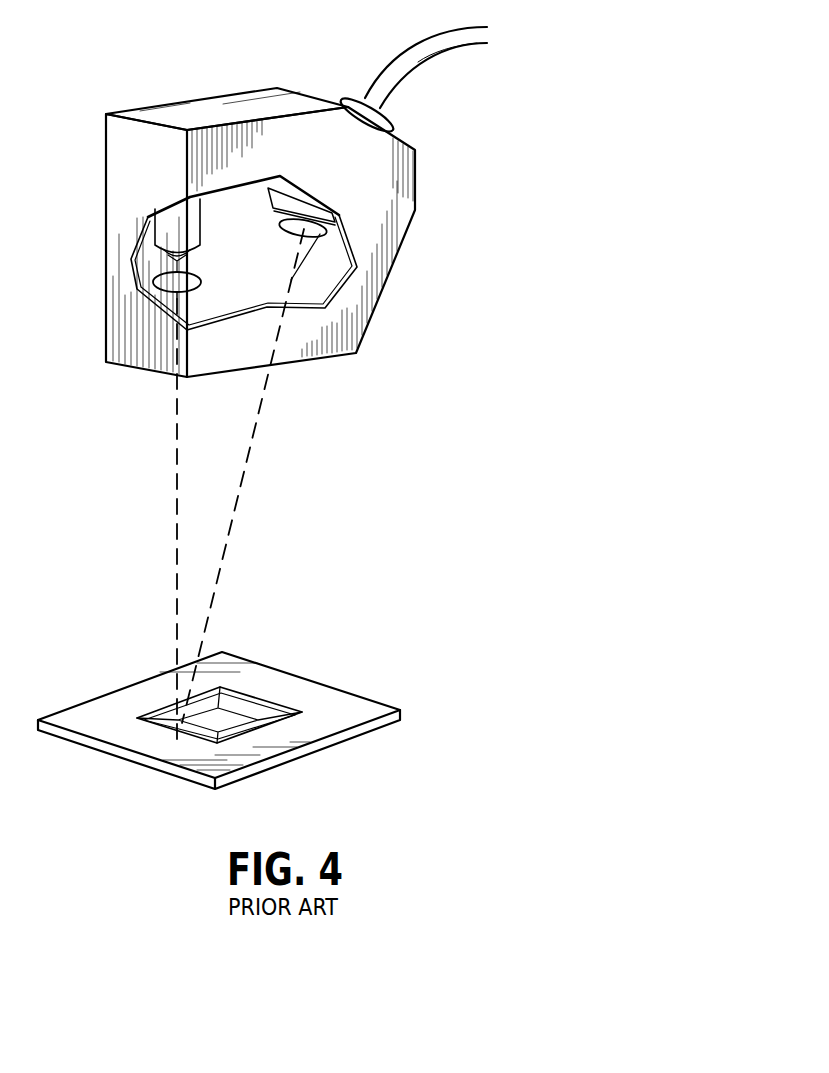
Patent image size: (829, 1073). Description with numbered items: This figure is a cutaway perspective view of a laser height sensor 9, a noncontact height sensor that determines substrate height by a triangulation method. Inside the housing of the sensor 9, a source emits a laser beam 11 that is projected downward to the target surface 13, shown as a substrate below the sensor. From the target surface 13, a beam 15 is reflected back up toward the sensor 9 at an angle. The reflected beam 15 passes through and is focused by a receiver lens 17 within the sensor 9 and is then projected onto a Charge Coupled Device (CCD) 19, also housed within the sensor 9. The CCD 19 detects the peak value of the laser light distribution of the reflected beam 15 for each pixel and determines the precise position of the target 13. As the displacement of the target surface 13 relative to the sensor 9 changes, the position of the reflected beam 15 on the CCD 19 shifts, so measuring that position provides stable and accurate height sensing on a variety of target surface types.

The laser height sensor 9 is at (71, 50).
The laser beam 11 is at (175, 465).
The target surface 13 is at (367, 705).
The reflected beam 15 is at (238, 493).
The receiver lens 17 is at (312, 237).
The Charge Coupled Device (CCD) 19 is at (317, 208).